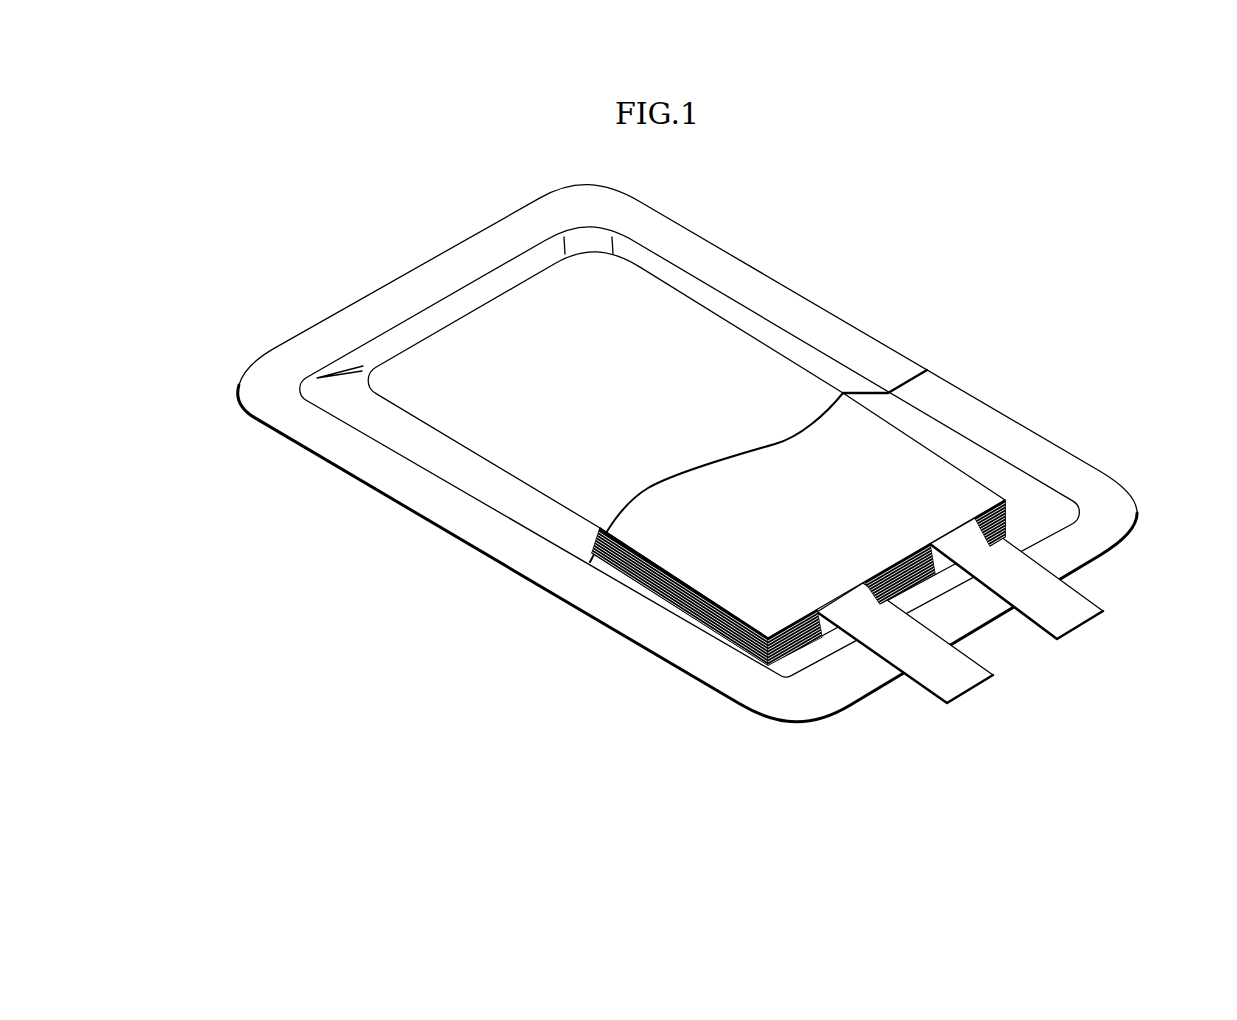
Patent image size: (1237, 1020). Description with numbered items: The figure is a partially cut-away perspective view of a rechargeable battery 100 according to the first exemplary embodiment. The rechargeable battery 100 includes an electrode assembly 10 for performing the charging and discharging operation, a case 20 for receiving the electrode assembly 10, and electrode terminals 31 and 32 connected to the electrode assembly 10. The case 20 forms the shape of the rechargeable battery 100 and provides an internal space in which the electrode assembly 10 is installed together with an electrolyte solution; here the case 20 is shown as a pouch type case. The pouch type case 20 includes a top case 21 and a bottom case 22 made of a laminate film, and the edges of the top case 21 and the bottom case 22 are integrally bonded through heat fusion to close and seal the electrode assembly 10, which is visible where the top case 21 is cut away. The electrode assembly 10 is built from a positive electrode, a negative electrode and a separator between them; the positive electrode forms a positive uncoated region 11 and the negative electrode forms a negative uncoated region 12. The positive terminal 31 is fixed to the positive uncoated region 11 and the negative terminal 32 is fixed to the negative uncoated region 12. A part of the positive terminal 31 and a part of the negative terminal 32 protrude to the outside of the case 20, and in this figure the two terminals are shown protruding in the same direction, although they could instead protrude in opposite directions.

The rechargeable battery 100 is at (866, 204).
The electrode assembly 10 is at (908, 428).
The positive uncoated region 11 is at (838, 618).
The negative uncoated region 12 is at (975, 538).
The case 20 is at (546, 670).
The top case 21 is at (528, 560).
The bottom case 22 is at (592, 603).
The positive terminal 31 is at (947, 682).
The negative terminal 32 is at (1057, 617).